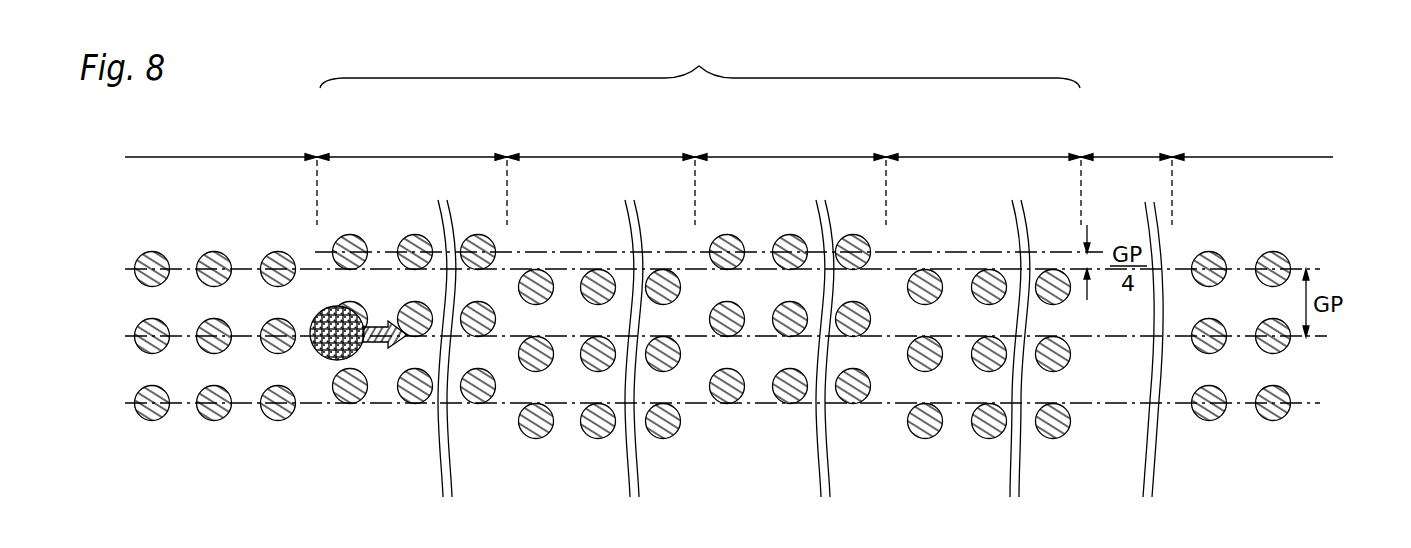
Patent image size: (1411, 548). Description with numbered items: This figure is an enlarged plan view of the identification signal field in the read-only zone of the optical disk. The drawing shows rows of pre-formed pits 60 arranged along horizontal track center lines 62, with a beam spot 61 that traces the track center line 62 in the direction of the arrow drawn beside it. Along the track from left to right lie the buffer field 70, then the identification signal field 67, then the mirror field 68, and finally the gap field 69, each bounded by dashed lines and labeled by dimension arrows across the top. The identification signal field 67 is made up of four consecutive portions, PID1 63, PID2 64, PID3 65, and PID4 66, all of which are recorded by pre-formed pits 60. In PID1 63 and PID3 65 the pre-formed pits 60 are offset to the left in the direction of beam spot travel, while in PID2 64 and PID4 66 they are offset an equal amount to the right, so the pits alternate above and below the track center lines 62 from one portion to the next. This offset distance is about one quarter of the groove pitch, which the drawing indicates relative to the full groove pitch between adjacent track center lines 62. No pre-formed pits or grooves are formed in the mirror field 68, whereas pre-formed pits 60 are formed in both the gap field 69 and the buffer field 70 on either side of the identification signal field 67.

The pre-formed pits 60 is at (227, 415).
The beam spot 61 is at (323, 358).
The track center lines 62 is at (1313, 270).
The PID1 63 is at (420, 157).
The PID2 64 is at (599, 157).
The PID3 65 is at (782, 157).
The PID4 66 is at (964, 157).
The identification signal field 67 is at (700, 60).
The mirror field 68 is at (1124, 157).
The gap field 69 is at (1270, 157).
The buffer field 70 is at (200, 157).